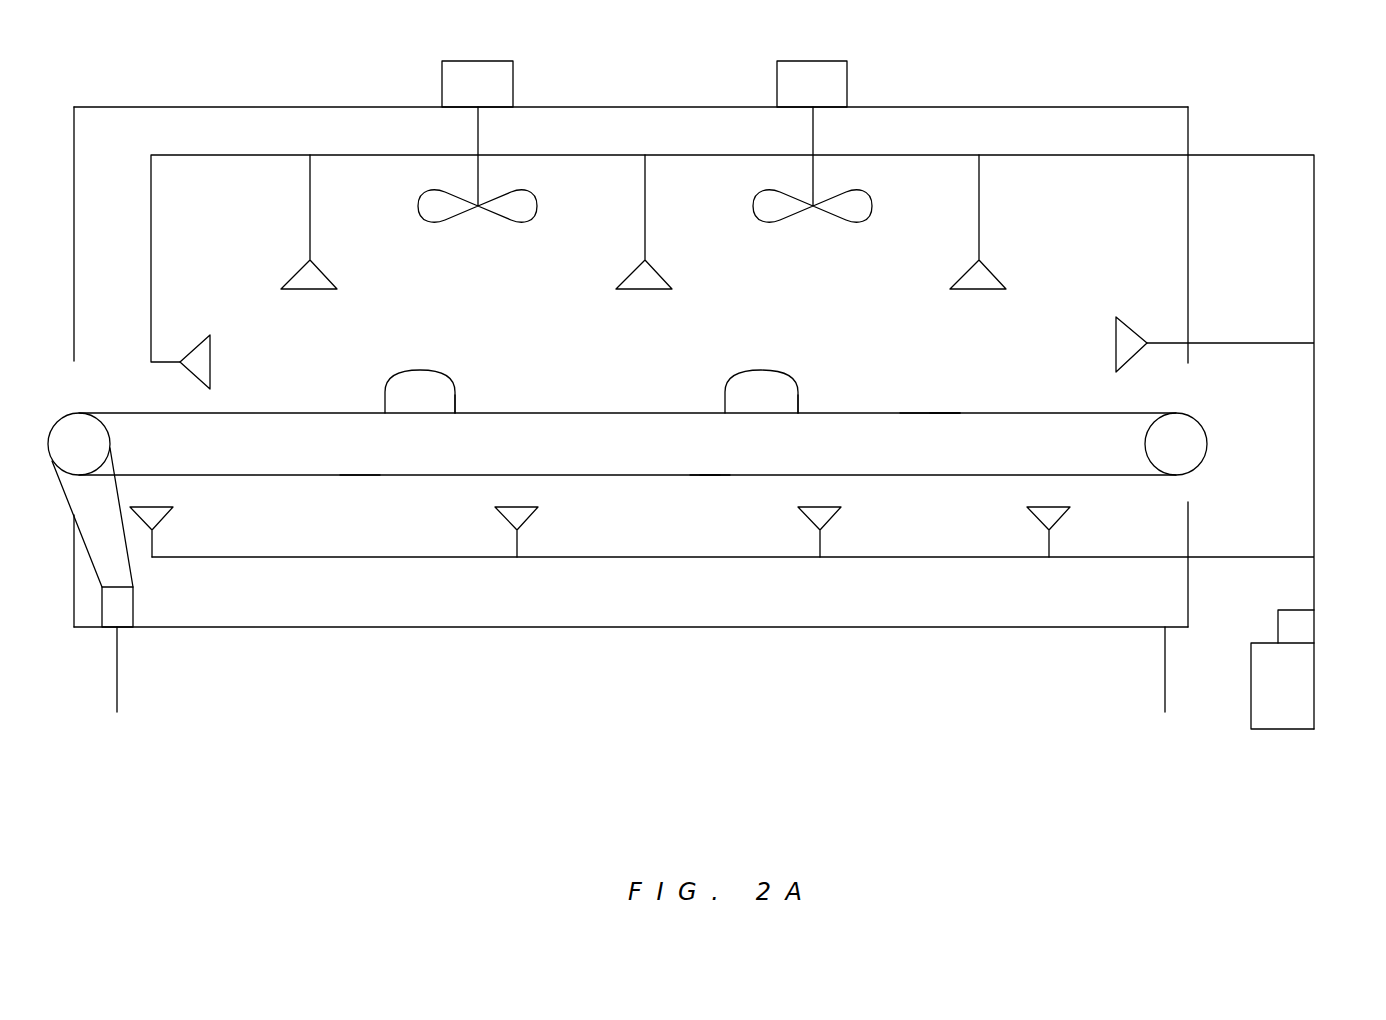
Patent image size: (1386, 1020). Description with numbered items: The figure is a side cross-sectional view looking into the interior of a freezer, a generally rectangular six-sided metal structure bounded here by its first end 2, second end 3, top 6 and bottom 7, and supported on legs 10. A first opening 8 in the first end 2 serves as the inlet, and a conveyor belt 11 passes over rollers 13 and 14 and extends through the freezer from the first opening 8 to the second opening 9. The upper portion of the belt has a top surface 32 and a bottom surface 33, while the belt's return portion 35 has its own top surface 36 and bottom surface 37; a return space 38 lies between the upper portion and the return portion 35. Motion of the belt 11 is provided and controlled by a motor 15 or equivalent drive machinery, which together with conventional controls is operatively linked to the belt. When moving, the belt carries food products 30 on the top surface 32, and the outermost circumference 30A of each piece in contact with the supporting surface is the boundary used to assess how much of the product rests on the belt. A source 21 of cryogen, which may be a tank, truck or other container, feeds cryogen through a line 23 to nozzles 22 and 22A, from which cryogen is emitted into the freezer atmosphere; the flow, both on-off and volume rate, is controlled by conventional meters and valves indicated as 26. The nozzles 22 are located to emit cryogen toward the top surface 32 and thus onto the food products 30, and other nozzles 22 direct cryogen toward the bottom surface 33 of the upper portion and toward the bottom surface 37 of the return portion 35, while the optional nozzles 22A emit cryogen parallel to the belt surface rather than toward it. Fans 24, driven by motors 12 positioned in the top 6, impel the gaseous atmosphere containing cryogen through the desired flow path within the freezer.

The first end 2 is at (74, 197).
The second end 3 is at (1188, 130).
The top 6 is at (645, 107).
The bottom 7 is at (360, 627).
The first opening 8 is at (104, 409).
The second opening 9 is at (1154, 409).
The legs 10 is at (117, 673).
The conveyor belt 11 is at (553, 413).
The motors 12 is at (644, 84).
The roller 13 is at (90, 500).
The roller 14 is at (1176, 444).
The motor 15 is at (120, 605).
The source of cryogen 21 is at (1282, 686).
The nozzles 22 is at (322, 271).
The nozzles 22A is at (212, 362).
The line 23 is at (340, 155).
The fans 24 is at (513, 190).
The meters and valves 26 is at (1297, 626).
The food products 30 is at (591, 391).
The outermost circumference 30A is at (455, 413).
The top surface of upper portion 32 is at (916, 413).
The bottom surface of upper portion 33 is at (943, 416).
The return portion 35 is at (362, 475).
The top surface of return portion 36 is at (703, 475).
The bottom surface of return portion 37 is at (715, 475).
The return space 38 is at (627, 454).